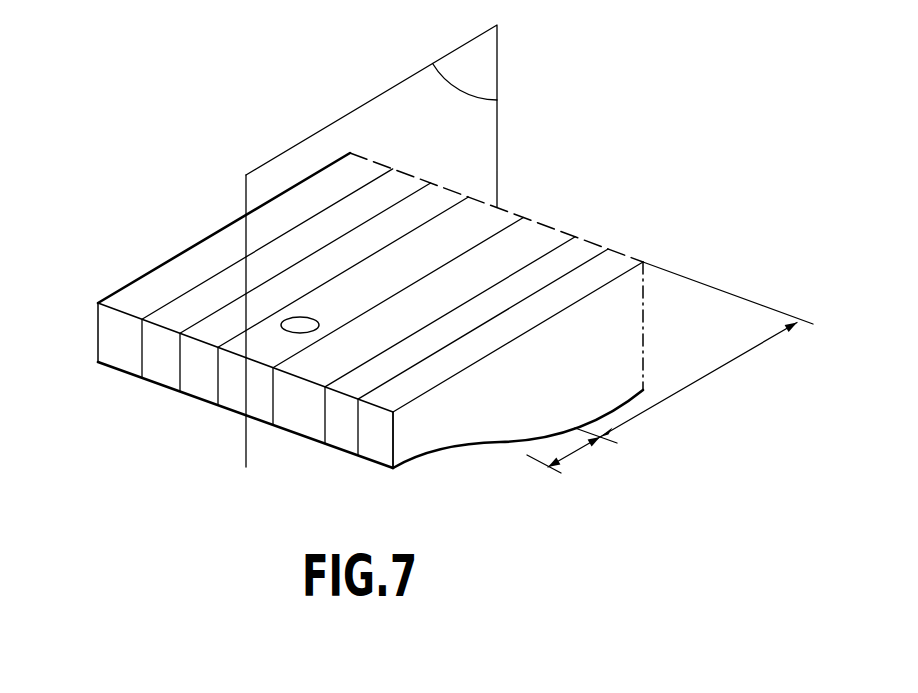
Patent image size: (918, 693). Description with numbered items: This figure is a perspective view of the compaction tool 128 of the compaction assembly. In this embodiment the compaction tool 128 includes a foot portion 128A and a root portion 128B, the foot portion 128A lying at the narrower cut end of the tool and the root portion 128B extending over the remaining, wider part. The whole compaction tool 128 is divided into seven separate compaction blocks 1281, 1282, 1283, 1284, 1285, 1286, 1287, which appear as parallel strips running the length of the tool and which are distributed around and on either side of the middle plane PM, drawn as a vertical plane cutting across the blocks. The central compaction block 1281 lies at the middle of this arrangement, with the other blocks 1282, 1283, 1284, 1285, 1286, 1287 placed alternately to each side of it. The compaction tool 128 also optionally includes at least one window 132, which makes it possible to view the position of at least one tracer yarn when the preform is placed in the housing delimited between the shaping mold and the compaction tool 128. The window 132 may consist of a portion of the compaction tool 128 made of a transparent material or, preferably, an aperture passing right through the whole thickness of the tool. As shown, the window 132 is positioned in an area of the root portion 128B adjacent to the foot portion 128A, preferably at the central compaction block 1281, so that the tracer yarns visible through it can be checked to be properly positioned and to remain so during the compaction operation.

The compaction tool 128 is at (386, 287).
The central compaction block 1281 is at (508, 223).
The compaction block 1282 is at (550, 239).
The compaction block 1283 is at (437, 201).
The compaction block 1284 is at (590, 251).
The compaction block 1285 is at (397, 193).
The compaction block 1286 is at (615, 263).
The compaction block 1287 is at (358, 179).
The window 132 is at (300, 325).
The foot portion 128A is at (583, 458).
The root portion 128B is at (706, 349).
The middle plane PM is at (371, 246).